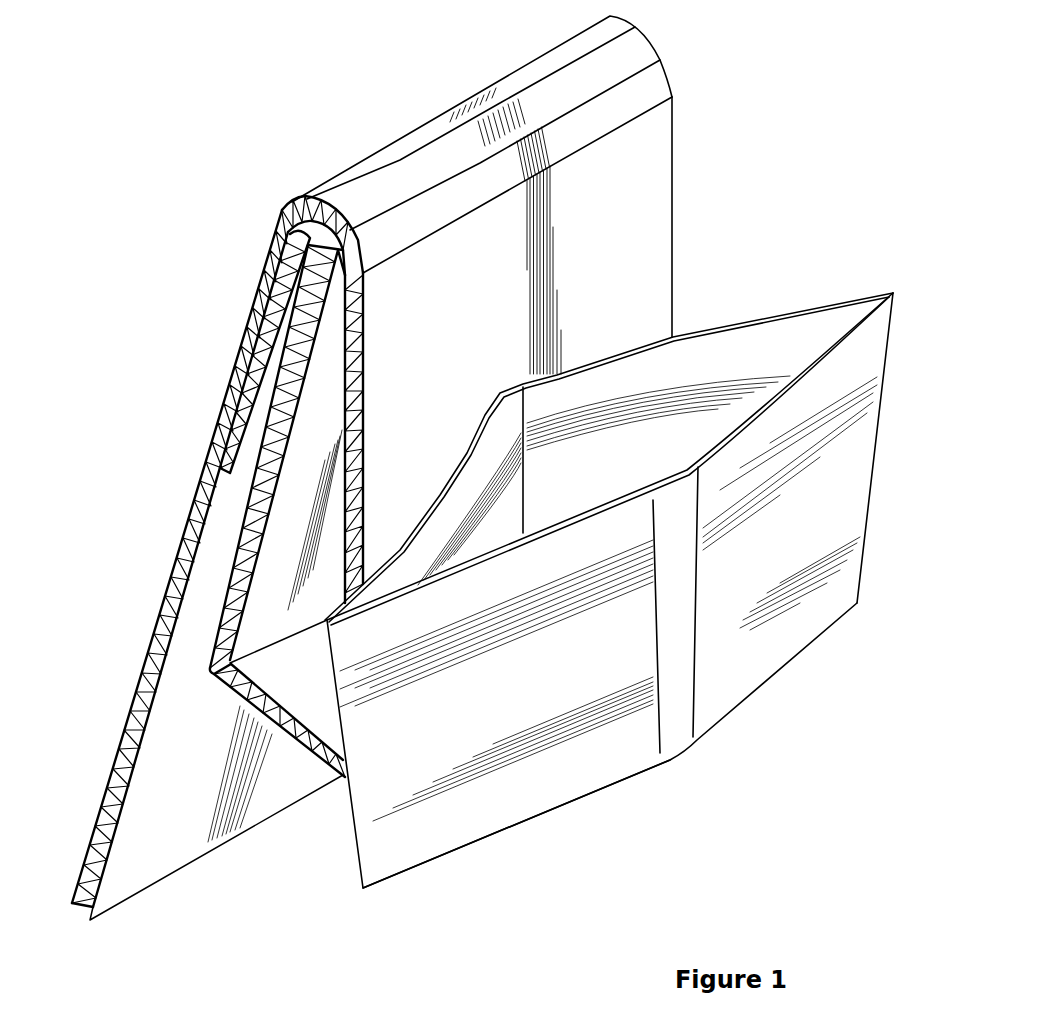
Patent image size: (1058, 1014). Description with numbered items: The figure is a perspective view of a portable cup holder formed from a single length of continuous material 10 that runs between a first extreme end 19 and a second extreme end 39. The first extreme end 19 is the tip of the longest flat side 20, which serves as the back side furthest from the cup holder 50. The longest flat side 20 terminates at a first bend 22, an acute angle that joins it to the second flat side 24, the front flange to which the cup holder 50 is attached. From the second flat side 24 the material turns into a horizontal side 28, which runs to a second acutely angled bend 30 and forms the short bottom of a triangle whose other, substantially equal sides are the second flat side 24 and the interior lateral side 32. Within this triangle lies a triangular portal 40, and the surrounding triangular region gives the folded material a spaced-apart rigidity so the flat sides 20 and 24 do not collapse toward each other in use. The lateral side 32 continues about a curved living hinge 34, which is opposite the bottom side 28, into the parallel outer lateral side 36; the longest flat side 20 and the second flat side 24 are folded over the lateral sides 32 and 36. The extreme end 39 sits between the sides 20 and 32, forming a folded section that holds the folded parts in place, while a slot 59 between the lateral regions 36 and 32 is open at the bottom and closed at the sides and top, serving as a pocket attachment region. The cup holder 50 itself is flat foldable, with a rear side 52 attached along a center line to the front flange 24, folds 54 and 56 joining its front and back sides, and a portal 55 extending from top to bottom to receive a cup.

The material 10 is at (476, 472).
The first extreme end 19 is at (72, 905).
The longest flat side 20 is at (152, 574).
The first bend 22 is at (463, 137).
The second flat side 24 is at (643, 205).
The horizontal side 28 is at (300, 732).
The second acutely angled bend 30 is at (218, 676).
The lateral side 32 is at (245, 528).
The curved region 34 is at (290, 248).
The lateral side 36 is at (265, 398).
The extreme end 39 is at (227, 473).
The triangular portal 40 is at (318, 582).
The cup holder 50 is at (630, 577).
The rear side 52 is at (523, 418).
The fold or side 54 is at (358, 845).
The portal 55 is at (608, 487).
The fold or side 56 is at (863, 500).
The slot 59 is at (263, 372).